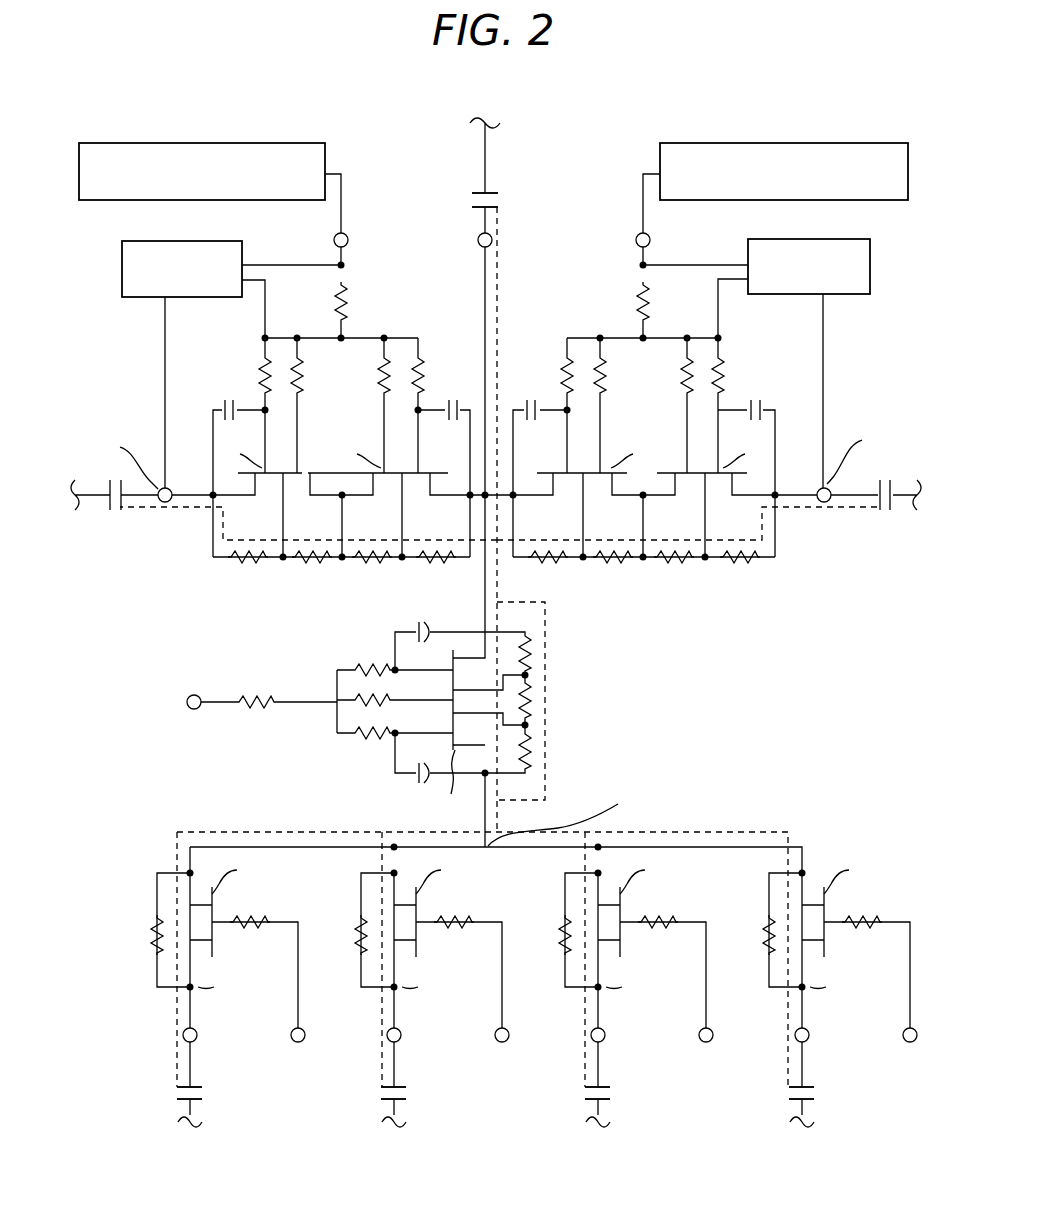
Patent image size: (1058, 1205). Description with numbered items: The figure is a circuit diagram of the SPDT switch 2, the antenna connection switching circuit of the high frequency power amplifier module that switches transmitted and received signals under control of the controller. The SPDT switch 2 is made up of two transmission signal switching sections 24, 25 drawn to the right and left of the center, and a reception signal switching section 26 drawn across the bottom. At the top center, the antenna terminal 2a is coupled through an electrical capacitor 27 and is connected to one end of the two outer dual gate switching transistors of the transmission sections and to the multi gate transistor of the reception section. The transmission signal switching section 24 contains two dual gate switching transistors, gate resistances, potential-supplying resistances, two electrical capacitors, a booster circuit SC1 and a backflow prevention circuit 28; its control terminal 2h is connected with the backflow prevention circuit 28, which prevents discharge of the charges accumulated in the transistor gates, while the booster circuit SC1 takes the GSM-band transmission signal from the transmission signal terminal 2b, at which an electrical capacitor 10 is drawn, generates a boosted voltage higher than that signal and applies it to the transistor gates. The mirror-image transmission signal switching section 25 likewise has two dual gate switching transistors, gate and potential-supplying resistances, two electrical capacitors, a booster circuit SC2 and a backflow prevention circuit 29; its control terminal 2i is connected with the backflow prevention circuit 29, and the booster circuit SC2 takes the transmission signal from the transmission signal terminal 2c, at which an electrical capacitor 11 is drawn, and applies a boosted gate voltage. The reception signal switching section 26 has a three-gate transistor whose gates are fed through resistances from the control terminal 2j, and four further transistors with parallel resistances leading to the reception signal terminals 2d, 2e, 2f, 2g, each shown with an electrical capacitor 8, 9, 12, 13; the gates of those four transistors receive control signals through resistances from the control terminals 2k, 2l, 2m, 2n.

The SPDT switch 2 is at (256, 1164).
The transmission signal switching section 24 is at (596, 158).
The transmission signal switching section 25 is at (378, 155).
The reception signal switching section 26 is at (144, 1062).
The electrical capacitor 27 is at (488, 195).
The backflow prevention circuit 28 is at (830, 143).
The backflow prevention circuit 29 is at (287, 143).
The booster circuit SC1 is at (826, 239).
The booster circuit SC2 is at (180, 241).
The antenna terminal 2a is at (478, 235).
The transmission signal terminal 2b is at (822, 503).
The transmission signal terminal 2c is at (165, 503).
The reception signal terminal 2d is at (197, 1030).
The reception signal terminal 2e is at (401, 1030).
The reception signal terminal 2f is at (605, 1030).
The reception signal terminal 2g is at (809, 1030).
The control terminal 2h is at (636, 236).
The control terminal 2i is at (349, 236).
The control terminal 2j is at (194, 710).
The control terminal 2k is at (305, 1030).
The control terminal 2l is at (509, 1030).
The control terminal 2m is at (713, 1030).
The control terminal 2n is at (902, 1034).
The electrical capacitor 8 is at (200, 1100).
The electrical capacitor 9 is at (404, 1100).
The electrical capacitor 10 is at (906, 514).
The electrical capacitor 11 is at (116, 512).
The electrical capacitor 12 is at (608, 1100).
The electrical capacitor 13 is at (812, 1100).